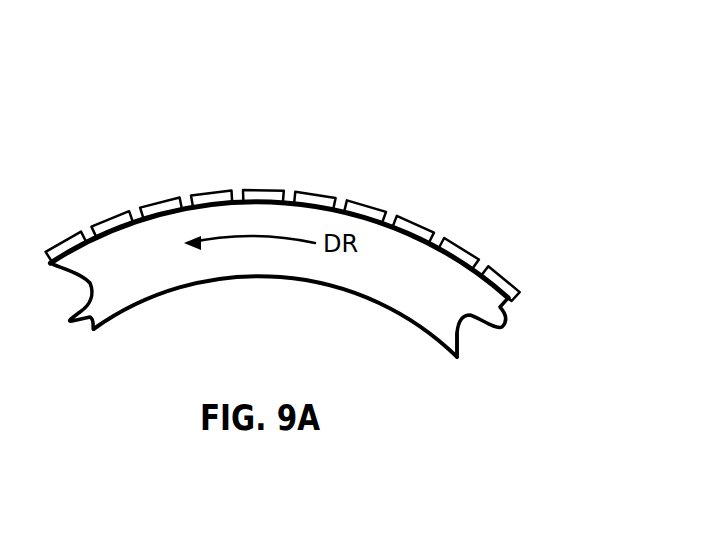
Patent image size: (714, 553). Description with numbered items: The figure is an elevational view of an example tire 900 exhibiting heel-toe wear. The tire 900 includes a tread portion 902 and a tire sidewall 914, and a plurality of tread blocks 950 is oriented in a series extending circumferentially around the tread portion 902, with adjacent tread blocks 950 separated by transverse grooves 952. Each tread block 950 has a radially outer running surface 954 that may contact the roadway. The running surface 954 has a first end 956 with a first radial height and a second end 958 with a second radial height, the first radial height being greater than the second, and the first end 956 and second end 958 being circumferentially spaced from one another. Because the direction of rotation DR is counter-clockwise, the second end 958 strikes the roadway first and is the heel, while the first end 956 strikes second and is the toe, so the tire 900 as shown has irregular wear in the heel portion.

The tire 900 is at (422, 91).
The tread portion 902 is at (524, 243).
The tire sidewall 914 is at (443, 313).
The tread block 950 is at (153, 212).
The transverse groove 952 is at (477, 260).
The radially outer running surface 954 is at (313, 192).
The first end 956 is at (232, 202).
The second end 958 is at (193, 198).